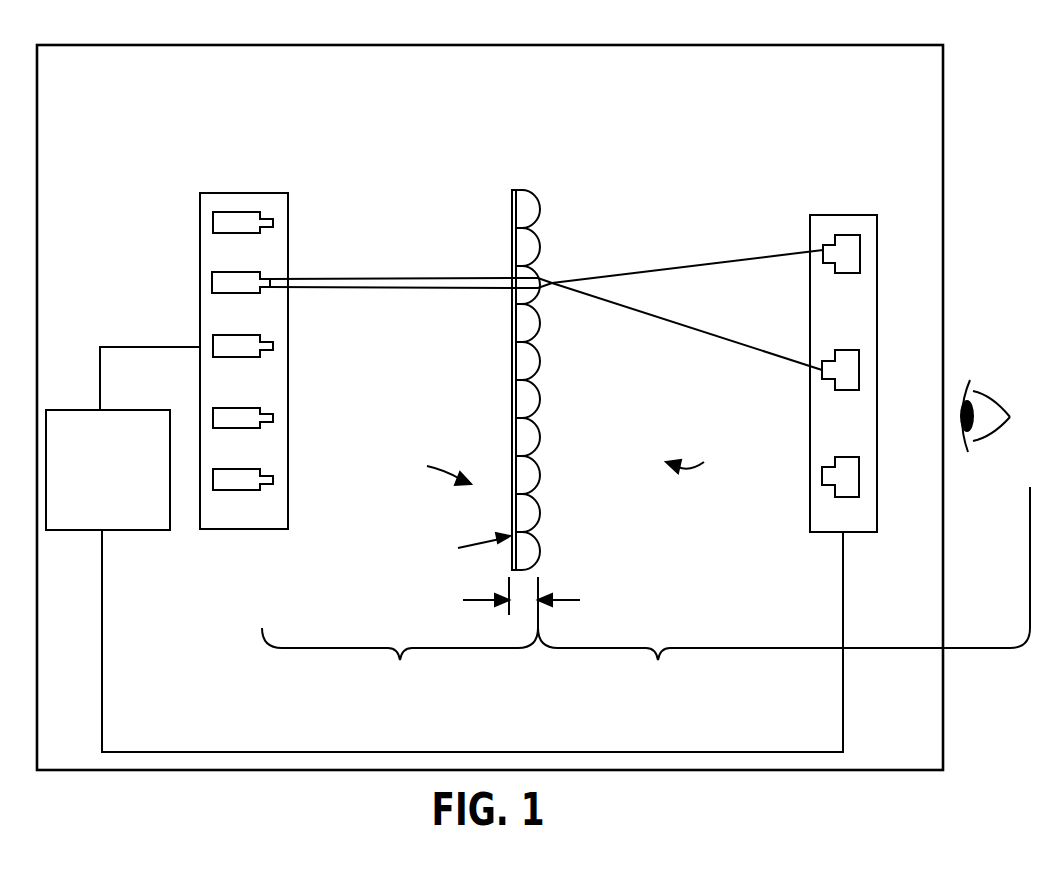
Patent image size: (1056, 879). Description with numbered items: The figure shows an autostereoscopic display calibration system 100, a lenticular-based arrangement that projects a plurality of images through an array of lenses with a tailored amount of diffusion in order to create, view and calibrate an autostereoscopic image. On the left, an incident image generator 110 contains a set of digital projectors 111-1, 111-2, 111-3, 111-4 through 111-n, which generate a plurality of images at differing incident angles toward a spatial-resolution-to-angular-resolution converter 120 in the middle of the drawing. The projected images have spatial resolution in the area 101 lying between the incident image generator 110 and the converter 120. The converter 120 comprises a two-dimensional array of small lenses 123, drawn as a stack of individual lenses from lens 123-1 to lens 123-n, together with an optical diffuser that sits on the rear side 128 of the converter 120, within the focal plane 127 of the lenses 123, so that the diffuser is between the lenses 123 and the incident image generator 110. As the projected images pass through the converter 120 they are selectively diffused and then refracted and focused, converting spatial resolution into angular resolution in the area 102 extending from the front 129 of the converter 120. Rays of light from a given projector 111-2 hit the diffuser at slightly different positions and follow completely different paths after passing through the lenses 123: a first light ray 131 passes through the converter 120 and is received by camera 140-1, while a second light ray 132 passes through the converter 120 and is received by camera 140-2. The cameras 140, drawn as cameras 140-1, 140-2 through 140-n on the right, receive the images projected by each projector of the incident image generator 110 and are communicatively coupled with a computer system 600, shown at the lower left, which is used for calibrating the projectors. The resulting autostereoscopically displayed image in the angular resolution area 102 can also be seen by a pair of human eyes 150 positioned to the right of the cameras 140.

The autostereoscopic display calibration system 100 is at (765, 739).
The spatial resolution area 101 is at (400, 662).
The angular resolution area 102 is at (658, 662).
The incident image generator 110 is at (248, 191).
The digital projector 111-1 is at (238, 234).
The digital projector 111-2 is at (238, 294).
The digital projector 111-3 is at (238, 358).
The digital projector 111-4 is at (238, 429).
The digital projector 111-n is at (238, 491).
The spatial-resolution-to-angular-resolution converter 120 is at (552, 178).
The lenses 123 is at (552, 546).
The lens 123-1 is at (541, 542).
The lens 123-n is at (543, 224).
The focal plane 127 is at (480, 601).
The rear side 128 is at (432, 453).
The front side 129 is at (697, 445).
The first light ray 131 is at (716, 264).
The second light ray 132 is at (762, 350).
The camera 140 is at (842, 349).
The camera 140-1 is at (845, 274).
The camera 140-2 is at (845, 391).
The camera 140-n is at (845, 498).
The human eyes 150 is at (996, 396).
The computer system 600 is at (94, 503).